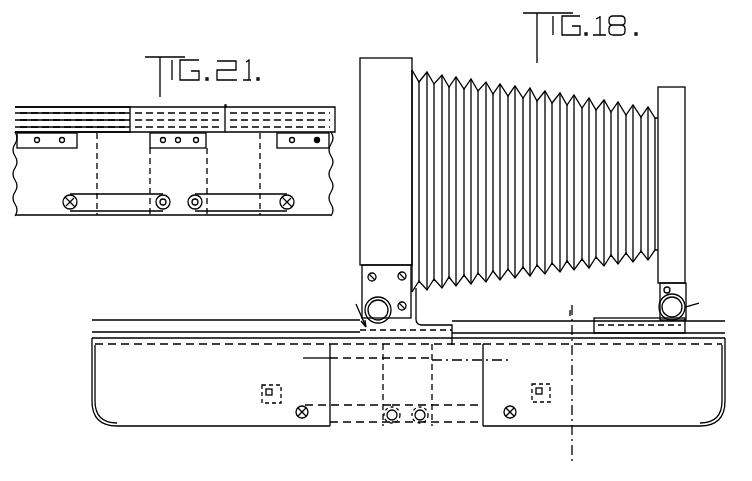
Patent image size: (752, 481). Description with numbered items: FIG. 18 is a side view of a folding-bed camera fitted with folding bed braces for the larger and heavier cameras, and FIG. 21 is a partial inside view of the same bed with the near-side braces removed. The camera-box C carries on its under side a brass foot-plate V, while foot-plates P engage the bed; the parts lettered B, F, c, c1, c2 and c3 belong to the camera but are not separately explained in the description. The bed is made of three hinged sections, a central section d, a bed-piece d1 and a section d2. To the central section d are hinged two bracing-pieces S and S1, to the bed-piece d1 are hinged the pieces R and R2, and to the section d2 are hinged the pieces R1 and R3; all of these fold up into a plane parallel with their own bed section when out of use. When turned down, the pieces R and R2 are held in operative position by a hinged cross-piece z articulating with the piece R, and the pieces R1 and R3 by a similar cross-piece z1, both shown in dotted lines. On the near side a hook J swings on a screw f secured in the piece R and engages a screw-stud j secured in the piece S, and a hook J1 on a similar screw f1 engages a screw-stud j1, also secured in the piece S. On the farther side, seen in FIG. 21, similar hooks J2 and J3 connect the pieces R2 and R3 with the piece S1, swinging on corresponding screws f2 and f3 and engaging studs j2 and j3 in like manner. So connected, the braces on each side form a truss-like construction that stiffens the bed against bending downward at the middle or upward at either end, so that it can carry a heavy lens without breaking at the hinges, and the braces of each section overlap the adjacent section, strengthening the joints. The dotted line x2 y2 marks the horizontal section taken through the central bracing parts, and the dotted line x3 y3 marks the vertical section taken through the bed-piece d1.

In FIG. 21, the bed section d2 is at (93, 110).
In FIG. 18, the bed section d2 is at (248, 330).
In FIG. 21, the central section of the bed d is at (147, 108).
In FIG. 18, the central section of the bed d is at (428, 323).
In FIG. 21, the bed-piece d1 is at (278, 111).
In FIG. 18, the bed-piece d1 is at (508, 326).
In FIG. 21, the bracing-piece R3 is at (81, 174).
In FIG. 21, the bracing-piece S1 is at (178, 174).
In FIG. 21, the bracing-piece R2 is at (270, 174).
In FIG. 21, the hook J3 is at (130, 205).
In FIG. 21, the hook J2 is at (239, 205).
In FIG. 21, the pivot screw f3 is at (68, 210).
In FIG. 21, the pivot screw j3 is at (163, 210).
In FIG. 21, the pivot screw j2 is at (195, 210).
In FIG. 21, the pivot screw f2 is at (287, 210).
In FIG. 18, the camera-box C is at (386, 188).
In FIG. 18, the front pivot c is at (378, 310).
In FIG. 18, the bellows B is at (440, 80).
In FIG. 18, the camera back frame F is at (672, 203).
In FIG. 18, the rear pivot c2 is at (672, 307).
In FIG. 18, the pivot screw c3 is at (704, 302).
In FIG. 18, the foot-plate P is at (623, 330).
In FIG. 18, the front foot c1 is at (352, 306).
In FIG. 18, the foot-plate V is at (327, 303).
In FIG. 18, the bracing-piece R1 is at (211, 382).
In FIG. 18, the bracing-piece R is at (604, 382).
In FIG. 18, the bracing-piece S is at (406, 385).
In FIG. 18, the dotted section line x2 is at (357, 358).
In FIG. 18, the dotted section line y2 is at (483, 360).
In FIG. 18, the hook J1 is at (361, 421).
In FIG. 18, the hook J is at (467, 424).
In FIG. 18, the screw f1 is at (304, 406).
In FIG. 18, the screw-stud j1 is at (391, 421).
In FIG. 18, the screw-stud j is at (424, 424).
In FIG. 18, the screw f is at (510, 406).
In FIG. 18, the cross-piece z1 is at (279, 404).
In FIG. 18, the hinged cross-piece z is at (531, 403).
In FIG. 18, the dotted section line x3 is at (566, 377).
In FIG. 18, the dotted section line y3 is at (573, 395).